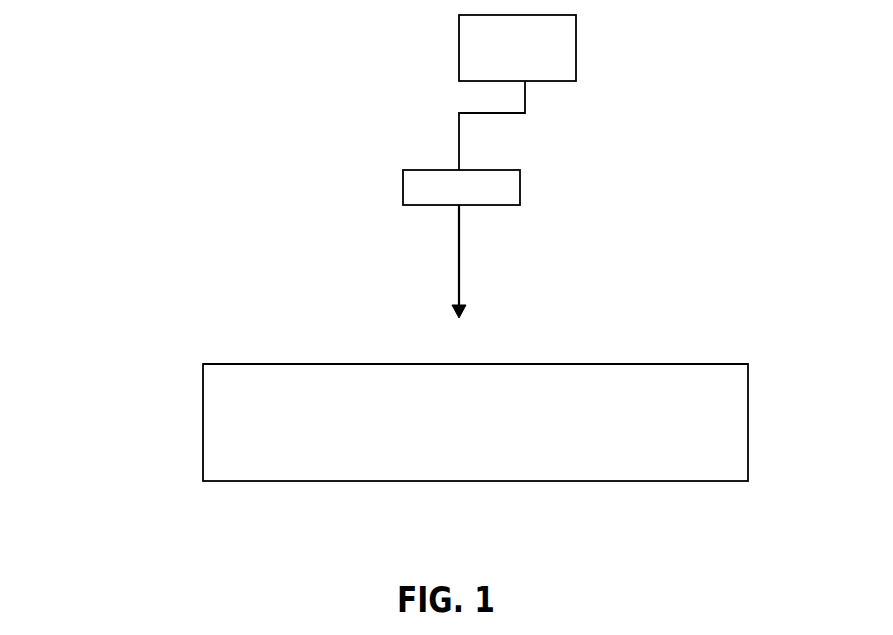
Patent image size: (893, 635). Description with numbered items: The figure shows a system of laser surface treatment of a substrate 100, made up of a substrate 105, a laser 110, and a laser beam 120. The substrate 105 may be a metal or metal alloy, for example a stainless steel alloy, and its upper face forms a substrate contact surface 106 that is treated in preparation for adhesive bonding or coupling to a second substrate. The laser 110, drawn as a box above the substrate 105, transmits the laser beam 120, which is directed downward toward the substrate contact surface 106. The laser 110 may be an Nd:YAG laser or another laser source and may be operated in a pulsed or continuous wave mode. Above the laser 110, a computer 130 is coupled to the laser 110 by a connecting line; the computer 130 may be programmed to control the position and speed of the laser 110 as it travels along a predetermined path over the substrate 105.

The system of laser surface treatment of a substrate 100 is at (102, 262).
The substrate 105 is at (257, 465).
The substrate contact surface 106 is at (589, 364).
The laser 110 is at (500, 188).
The laser beam 120 is at (459, 270).
The computer 130 is at (552, 49).